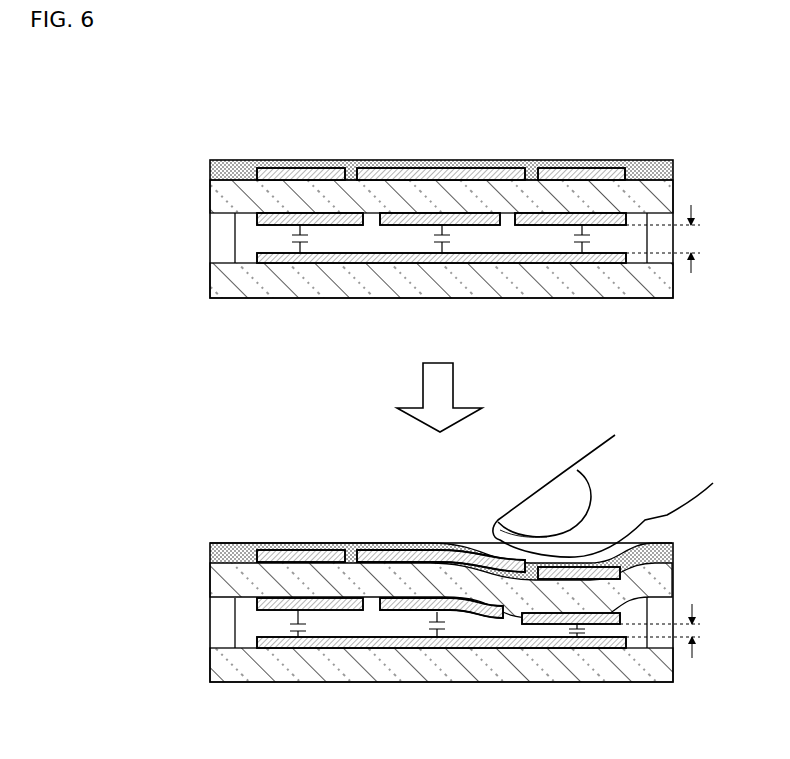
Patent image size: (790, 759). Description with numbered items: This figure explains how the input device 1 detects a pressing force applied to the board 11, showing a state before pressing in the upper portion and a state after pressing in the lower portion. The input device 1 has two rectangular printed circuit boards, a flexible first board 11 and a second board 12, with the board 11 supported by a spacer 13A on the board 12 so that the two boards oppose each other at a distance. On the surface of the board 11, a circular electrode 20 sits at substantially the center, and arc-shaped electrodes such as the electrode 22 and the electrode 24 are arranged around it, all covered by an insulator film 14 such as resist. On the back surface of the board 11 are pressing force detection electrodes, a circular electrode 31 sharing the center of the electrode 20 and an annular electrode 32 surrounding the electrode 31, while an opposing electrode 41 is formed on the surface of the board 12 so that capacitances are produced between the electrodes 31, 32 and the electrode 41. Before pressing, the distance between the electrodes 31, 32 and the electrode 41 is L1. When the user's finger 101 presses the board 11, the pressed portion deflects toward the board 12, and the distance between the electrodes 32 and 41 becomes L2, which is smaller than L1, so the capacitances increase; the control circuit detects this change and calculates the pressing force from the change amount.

The input device 1 is at (256, 86).
The board 11 is at (210, 198).
The board 12 is at (210, 285).
The spacer 13A is at (210, 240).
The insulator film 14 is at (210, 163).
The electrode 20 is at (502, 168).
The electrode 22 is at (292, 168).
The electrode 24 is at (602, 168).
The pressing force detection electrode 31 is at (386, 216).
The pressing force detection electrode 32 is at (258, 216).
The electrode 41 is at (445, 265).
The finger 101 is at (602, 470).
The distance L1 is at (675, 239).
The distance L2 is at (673, 631).